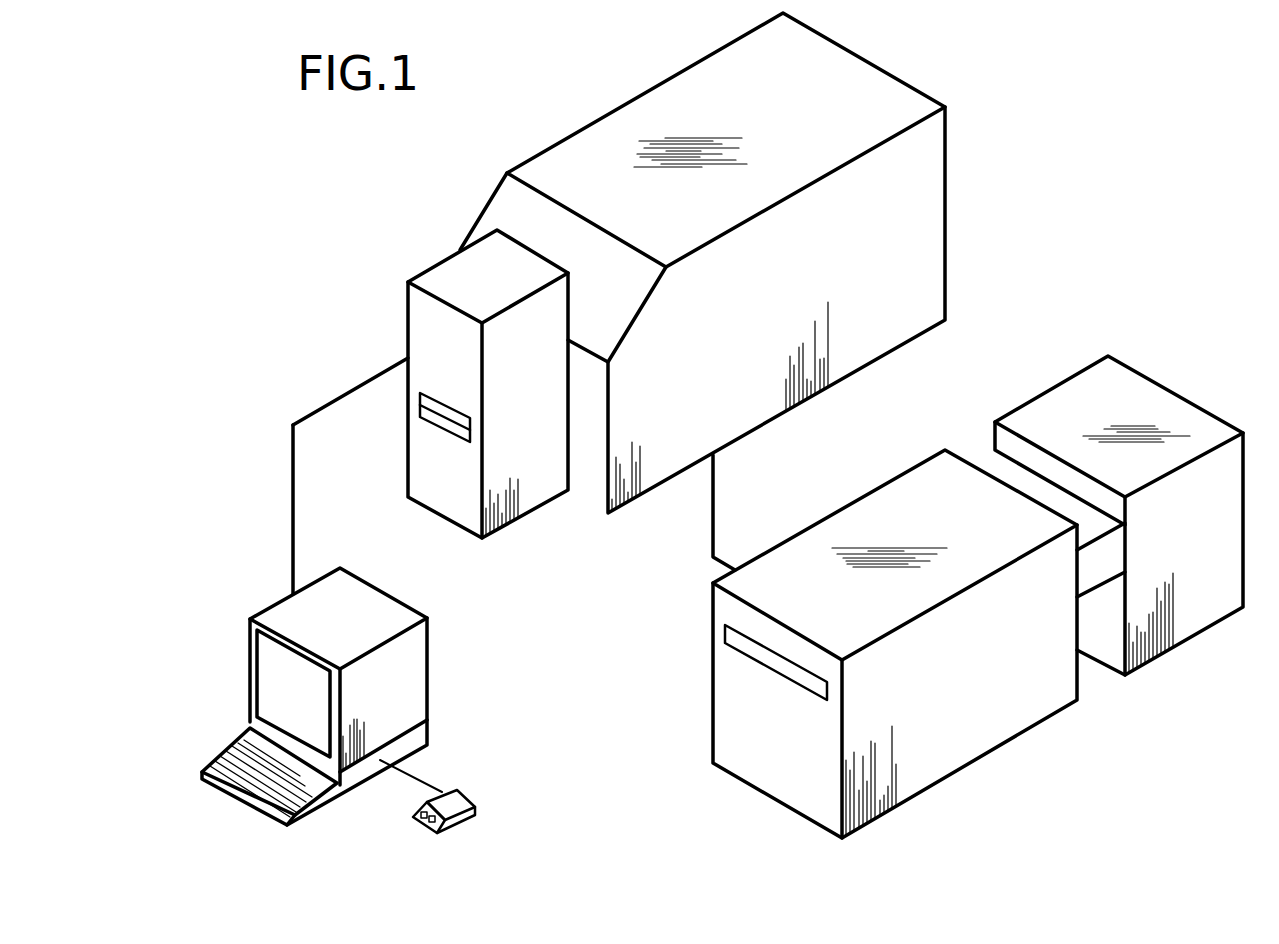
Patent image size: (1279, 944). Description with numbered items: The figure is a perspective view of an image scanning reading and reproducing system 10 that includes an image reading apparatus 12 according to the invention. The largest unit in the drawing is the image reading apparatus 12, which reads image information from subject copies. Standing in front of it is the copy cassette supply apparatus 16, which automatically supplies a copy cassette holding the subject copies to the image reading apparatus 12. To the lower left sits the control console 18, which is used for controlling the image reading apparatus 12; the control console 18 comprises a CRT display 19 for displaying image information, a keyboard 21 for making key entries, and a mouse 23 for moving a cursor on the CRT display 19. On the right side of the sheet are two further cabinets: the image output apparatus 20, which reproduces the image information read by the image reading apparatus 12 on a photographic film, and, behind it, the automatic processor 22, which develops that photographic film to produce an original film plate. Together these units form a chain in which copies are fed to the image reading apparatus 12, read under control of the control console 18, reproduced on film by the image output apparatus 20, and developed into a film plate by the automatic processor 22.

The image processing system 10 is at (533, 126).
The image reading apparatus 12 is at (932, 233).
The copy cassette supply apparatus 16 is at (427, 280).
The control console 18 is at (431, 658).
The CRT display 19 is at (262, 660).
The image output apparatus 20 is at (868, 510).
The keyboard 21 is at (307, 815).
The automatic processor 22 is at (1028, 418).
The mouse 23 is at (462, 800).